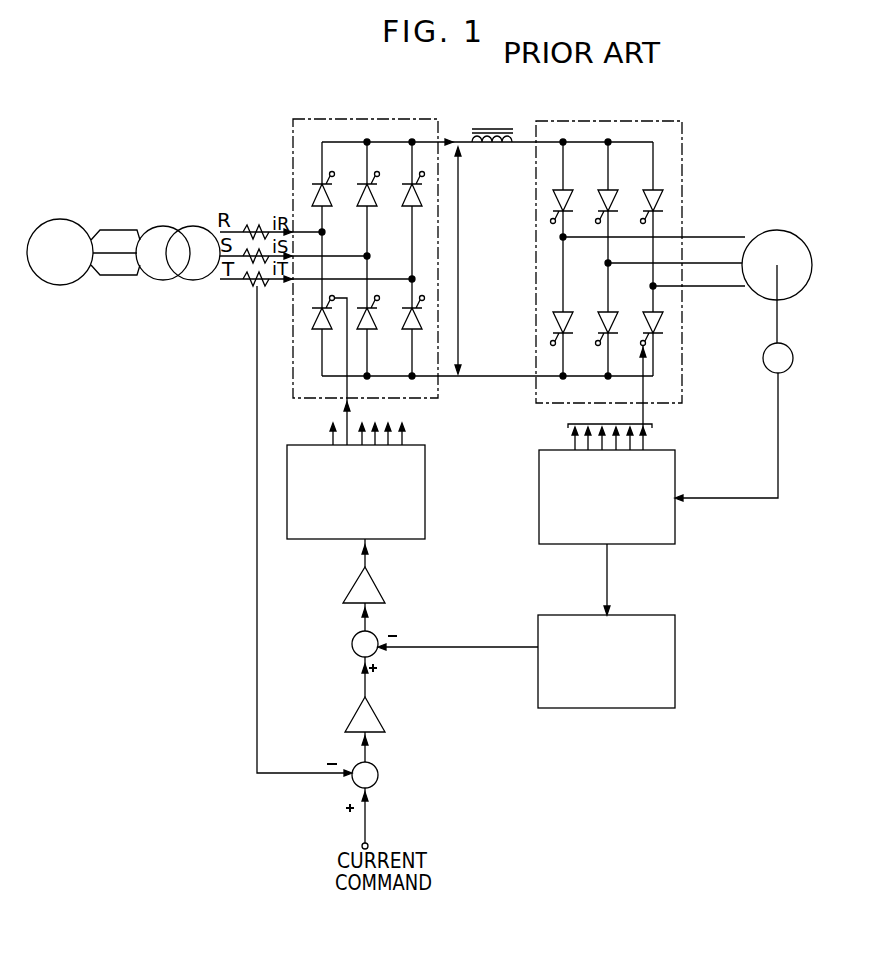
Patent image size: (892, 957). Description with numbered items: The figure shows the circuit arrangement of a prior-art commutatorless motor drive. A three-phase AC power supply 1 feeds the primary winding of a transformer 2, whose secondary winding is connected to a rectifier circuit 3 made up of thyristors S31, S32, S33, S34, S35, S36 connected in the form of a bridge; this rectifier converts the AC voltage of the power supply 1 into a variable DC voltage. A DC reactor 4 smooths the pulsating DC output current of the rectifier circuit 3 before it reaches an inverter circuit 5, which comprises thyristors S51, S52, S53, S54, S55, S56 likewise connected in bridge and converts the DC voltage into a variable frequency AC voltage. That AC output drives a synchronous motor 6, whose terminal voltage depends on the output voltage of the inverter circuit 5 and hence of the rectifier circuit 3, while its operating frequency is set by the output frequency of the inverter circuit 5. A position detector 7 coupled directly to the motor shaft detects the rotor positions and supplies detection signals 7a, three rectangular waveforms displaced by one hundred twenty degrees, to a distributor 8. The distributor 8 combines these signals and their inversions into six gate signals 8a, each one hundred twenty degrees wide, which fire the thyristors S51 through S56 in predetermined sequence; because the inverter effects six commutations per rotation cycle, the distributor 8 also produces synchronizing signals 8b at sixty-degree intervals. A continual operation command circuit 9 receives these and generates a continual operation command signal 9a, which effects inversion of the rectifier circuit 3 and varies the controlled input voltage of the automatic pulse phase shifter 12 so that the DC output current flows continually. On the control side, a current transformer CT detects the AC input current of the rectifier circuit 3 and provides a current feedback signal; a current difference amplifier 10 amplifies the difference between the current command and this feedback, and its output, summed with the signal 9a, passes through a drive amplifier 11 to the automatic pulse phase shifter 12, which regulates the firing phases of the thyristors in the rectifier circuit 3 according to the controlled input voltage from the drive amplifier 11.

The three-phase AC power supply 1 is at (80, 226).
The transformer 2 is at (163, 226).
The current transformer CT is at (257, 242).
The rectifier circuit 3 is at (457, 243).
The DC reactor 4 is at (490, 130).
The inverter circuit 5 is at (640, 245).
The synchronous motor 6 is at (777, 230).
The position detector 7 is at (763, 359).
The detection signals 7a is at (714, 498).
The distributor 8 is at (539, 493).
The gate signal 8a is at (610, 398).
The synchronizing signals 8b is at (610, 578).
The continual operation command circuit 9 is at (680, 655).
The continual operation command signal 9a is at (446, 645).
The current difference amplifier 10 is at (374, 708).
The drive amplifier 11 is at (375, 584).
The automatic pulse phase shifter 12 is at (425, 493).
The thyristor S31 is at (331, 197).
The thyristor S32 is at (376, 197).
The thyristor S33 is at (402, 193).
The thyristor S34 is at (312, 308).
The thyristor S35 is at (377, 322).
The thyristor S36 is at (402, 310).
The thyristor S51 is at (570, 200).
The thyristor S52 is at (614, 200).
The thyristor S53 is at (645, 211).
The thyristor S54 is at (570, 318).
The thyristor S55 is at (604, 326).
The thyristor S56 is at (644, 326).